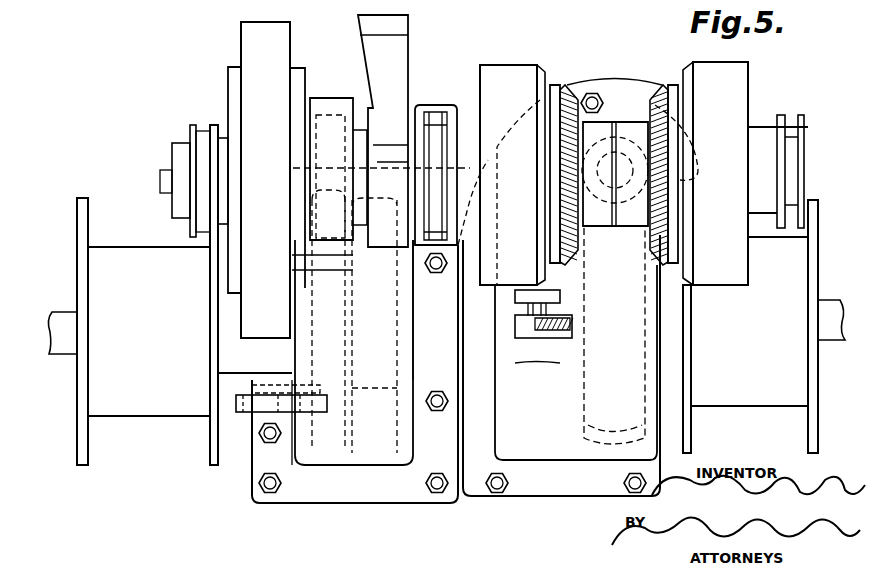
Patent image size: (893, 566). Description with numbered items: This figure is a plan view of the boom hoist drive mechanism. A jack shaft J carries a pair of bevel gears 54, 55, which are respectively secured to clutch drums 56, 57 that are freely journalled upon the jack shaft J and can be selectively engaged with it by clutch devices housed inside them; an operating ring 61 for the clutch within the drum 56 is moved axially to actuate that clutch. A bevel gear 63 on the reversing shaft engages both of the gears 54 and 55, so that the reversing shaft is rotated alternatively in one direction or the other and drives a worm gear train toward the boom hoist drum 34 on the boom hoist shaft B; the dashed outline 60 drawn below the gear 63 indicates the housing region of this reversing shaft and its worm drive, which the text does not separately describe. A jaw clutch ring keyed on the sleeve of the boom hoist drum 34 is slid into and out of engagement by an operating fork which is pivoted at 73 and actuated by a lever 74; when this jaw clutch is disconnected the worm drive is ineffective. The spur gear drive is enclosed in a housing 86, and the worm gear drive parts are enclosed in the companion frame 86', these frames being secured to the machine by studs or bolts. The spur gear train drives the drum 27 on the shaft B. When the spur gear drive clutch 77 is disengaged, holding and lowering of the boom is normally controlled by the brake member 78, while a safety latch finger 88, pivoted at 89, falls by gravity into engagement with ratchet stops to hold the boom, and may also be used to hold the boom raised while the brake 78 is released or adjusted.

The drum 27 is at (135, 424).
The boom hoist drum 34 is at (727, 412).
The boom hoist shaft B is at (62, 355).
The jack shaft J is at (160, 177).
The spur gear drive clutch 77 is at (228, 90).
The brake member 78 is at (241, 38).
The operating ring 61 is at (429, 132).
The housing 86 is at (353, 344).
The casing or frame for the worm gear drive 86' is at (561, 382).
The latch member or finger 88 is at (250, 405).
The pivot 89 is at (252, 389).
The clutch drum 56 is at (507, 49).
The clutch drum 57 is at (707, 62).
The bevel gear 54 is at (567, 92).
The bevel gear 55 is at (658, 88).
The bevel gear 63 is at (620, 118).
The housing 60 is at (588, 402).
The pivot 73 is at (545, 306).
The lever 74 is at (570, 340).